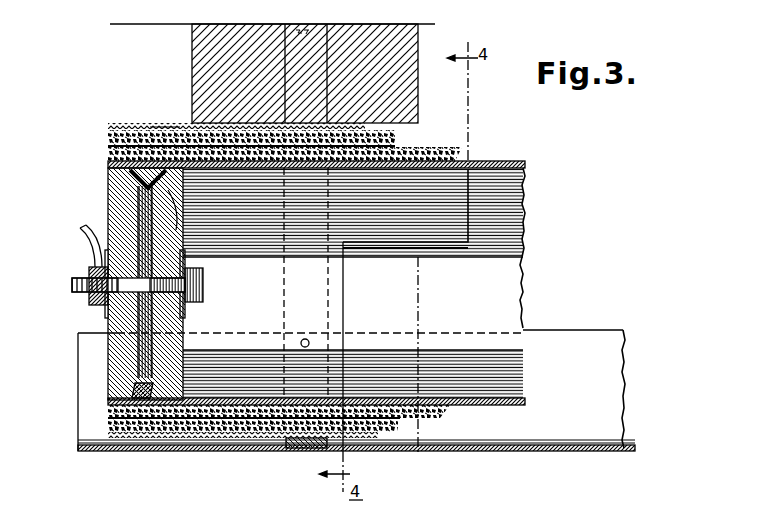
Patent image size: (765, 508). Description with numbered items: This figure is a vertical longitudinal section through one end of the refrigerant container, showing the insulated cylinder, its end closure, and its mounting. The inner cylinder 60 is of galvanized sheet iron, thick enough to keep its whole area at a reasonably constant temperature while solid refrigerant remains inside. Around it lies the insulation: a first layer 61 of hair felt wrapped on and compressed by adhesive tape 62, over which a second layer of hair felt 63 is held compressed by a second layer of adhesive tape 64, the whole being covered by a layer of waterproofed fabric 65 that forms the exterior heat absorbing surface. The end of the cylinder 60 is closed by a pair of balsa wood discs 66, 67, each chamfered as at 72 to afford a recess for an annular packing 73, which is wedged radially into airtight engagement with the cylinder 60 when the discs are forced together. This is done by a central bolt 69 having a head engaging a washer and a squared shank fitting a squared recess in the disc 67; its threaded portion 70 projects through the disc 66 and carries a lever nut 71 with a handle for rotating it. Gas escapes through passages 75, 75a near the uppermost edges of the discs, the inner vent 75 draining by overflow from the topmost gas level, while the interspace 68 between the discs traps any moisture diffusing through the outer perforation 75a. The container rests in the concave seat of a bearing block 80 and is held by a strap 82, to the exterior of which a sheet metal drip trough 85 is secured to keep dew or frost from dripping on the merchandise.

The inner cylinder 60 is at (510, 162).
The layer of hair felt 61 is at (108, 164).
The adhesive tape 62 is at (108, 152).
The second layer of hair felt 63 is at (108, 138).
The second layer of adhesive tape 64 is at (128, 128).
The waterproofed fabric 65 is at (157, 127).
The disc 66 is at (108, 318).
The disc 67 is at (183, 342).
The interspace 68 is at (186, 318).
The central bolt 69 is at (140, 283).
The threaded portion 70 is at (72, 284).
The lever nut 71 is at (90, 272).
The chamfer 72 is at (153, 390).
The annular packing 73 is at (130, 386).
The inner vent passage 75 is at (182, 207).
The outer perforation 75a is at (132, 188).
The bearing block 80 is at (196, 50).
The strap 82 is at (297, 449).
The drip trough 85 is at (615, 369).